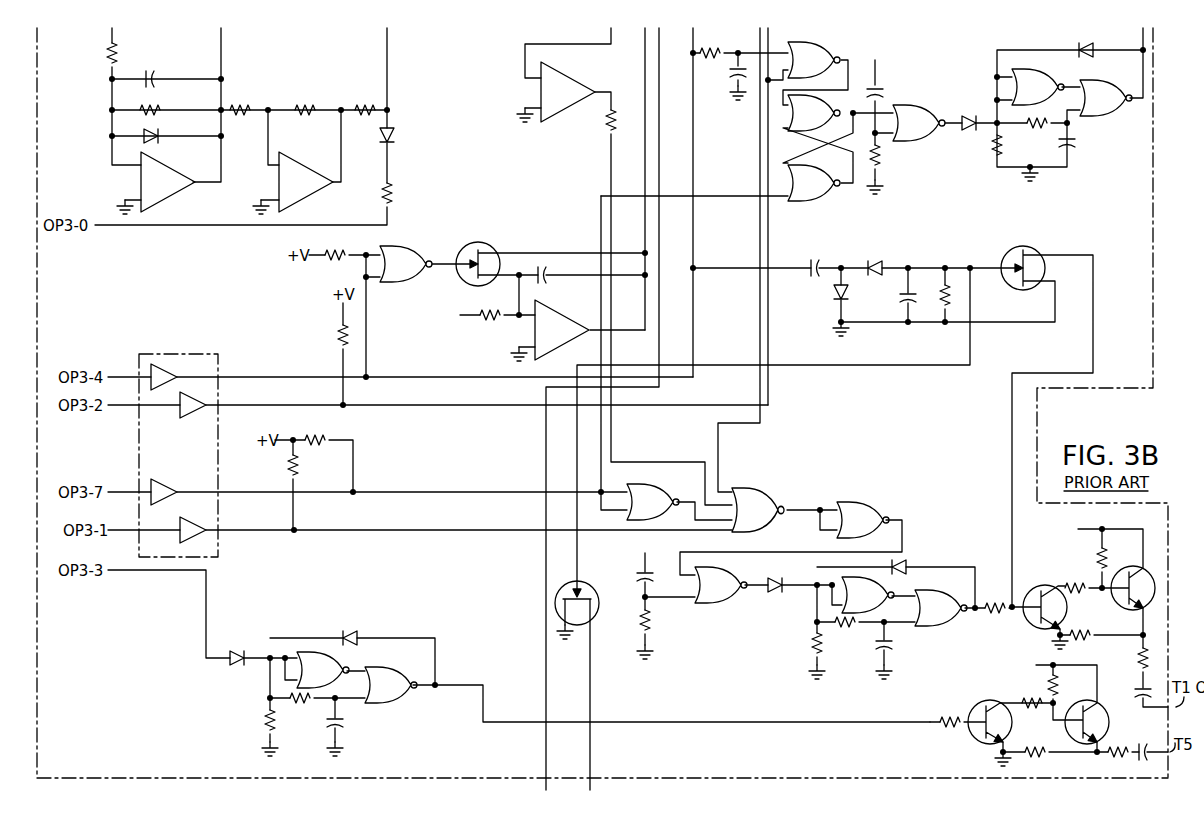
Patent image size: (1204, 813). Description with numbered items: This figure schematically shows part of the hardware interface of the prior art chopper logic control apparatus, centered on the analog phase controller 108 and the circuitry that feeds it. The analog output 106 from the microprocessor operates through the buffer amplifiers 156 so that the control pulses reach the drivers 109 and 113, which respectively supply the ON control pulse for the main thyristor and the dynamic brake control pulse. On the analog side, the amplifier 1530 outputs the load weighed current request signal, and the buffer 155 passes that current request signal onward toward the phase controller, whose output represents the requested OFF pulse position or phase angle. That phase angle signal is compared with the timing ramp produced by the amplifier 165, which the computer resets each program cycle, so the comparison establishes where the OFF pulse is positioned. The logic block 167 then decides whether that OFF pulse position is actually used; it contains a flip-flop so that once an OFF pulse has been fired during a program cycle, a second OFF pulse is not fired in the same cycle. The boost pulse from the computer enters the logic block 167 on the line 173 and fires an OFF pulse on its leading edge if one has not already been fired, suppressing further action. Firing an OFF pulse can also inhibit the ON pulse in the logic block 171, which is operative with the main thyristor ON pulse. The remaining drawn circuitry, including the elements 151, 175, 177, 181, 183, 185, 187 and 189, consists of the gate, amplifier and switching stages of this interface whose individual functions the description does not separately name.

The analog output 106 is at (92, 319).
The analog phase controller 108 is at (1155, 152).
The driver 109 is at (1102, 619).
The driver 113 is at (1092, 694).
The field effect transistor switch 151 is at (1010, 315).
The buffer 155 is at (290, 163).
The amplifier 1530 is at (163, 163).
The buffer amplifiers 156 is at (203, 354).
The amplifier 165 is at (552, 308).
The logic block 167 is at (749, 140).
The logic block 171 is at (805, 544).
The line 173 is at (693, 380).
The NOR gate 175 is at (914, 104).
The NOR gate timer 177 is at (1118, 149).
The operational amplifier 181 is at (569, 80).
The NOR gate 183 is at (707, 603).
The NOR gate timer 185 is at (972, 593).
The field effect transistor 187 is at (599, 594).
The NOR gate timer 189 is at (425, 664).